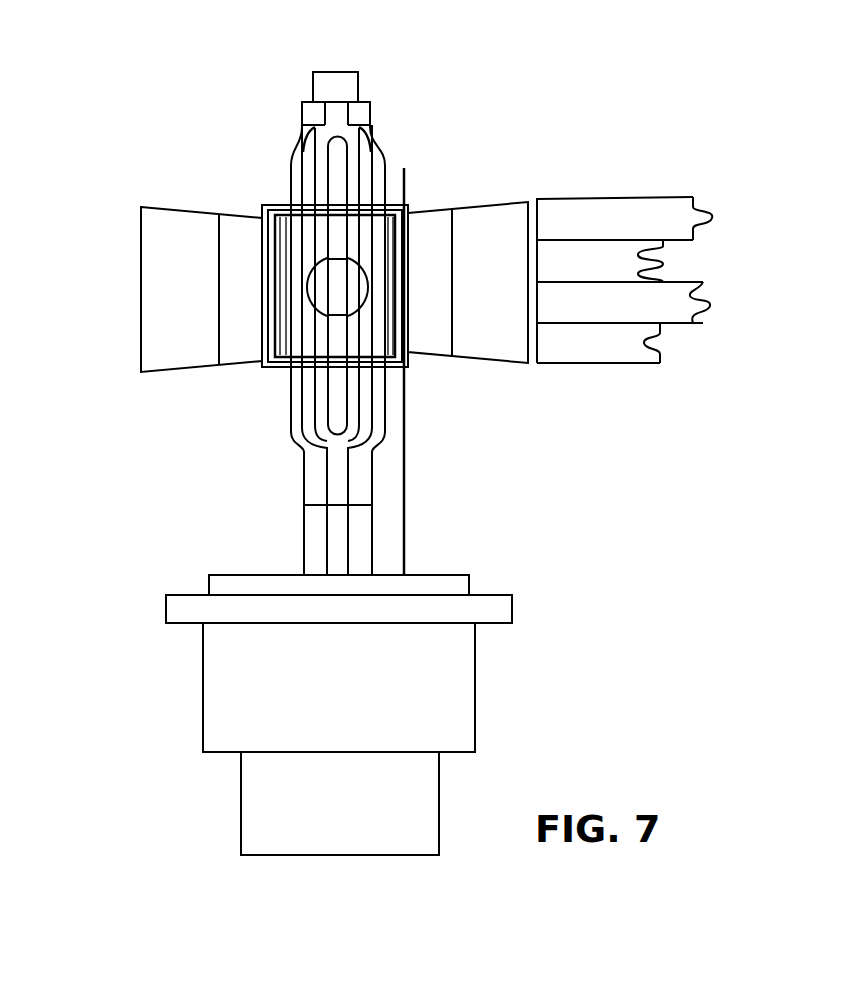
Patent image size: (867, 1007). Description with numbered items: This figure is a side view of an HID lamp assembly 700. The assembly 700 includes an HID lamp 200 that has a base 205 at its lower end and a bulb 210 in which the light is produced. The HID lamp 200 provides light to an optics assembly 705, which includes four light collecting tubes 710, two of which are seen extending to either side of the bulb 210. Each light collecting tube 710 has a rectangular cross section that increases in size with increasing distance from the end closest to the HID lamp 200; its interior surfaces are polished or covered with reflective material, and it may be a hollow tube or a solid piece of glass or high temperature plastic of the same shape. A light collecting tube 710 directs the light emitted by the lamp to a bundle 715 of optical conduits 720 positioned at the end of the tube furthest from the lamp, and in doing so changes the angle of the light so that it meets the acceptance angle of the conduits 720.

The HID lamp assembly 700 is at (388, 100).
The HID lamp 200 is at (287, 157).
The bulb 210 is at (327, 295).
The base 205 is at (166, 628).
The optics assembly 705 is at (470, 204).
The light collecting tube 710 is at (139, 240).
The bundle 715 is at (587, 196).
The optical conduit 720 is at (694, 200).